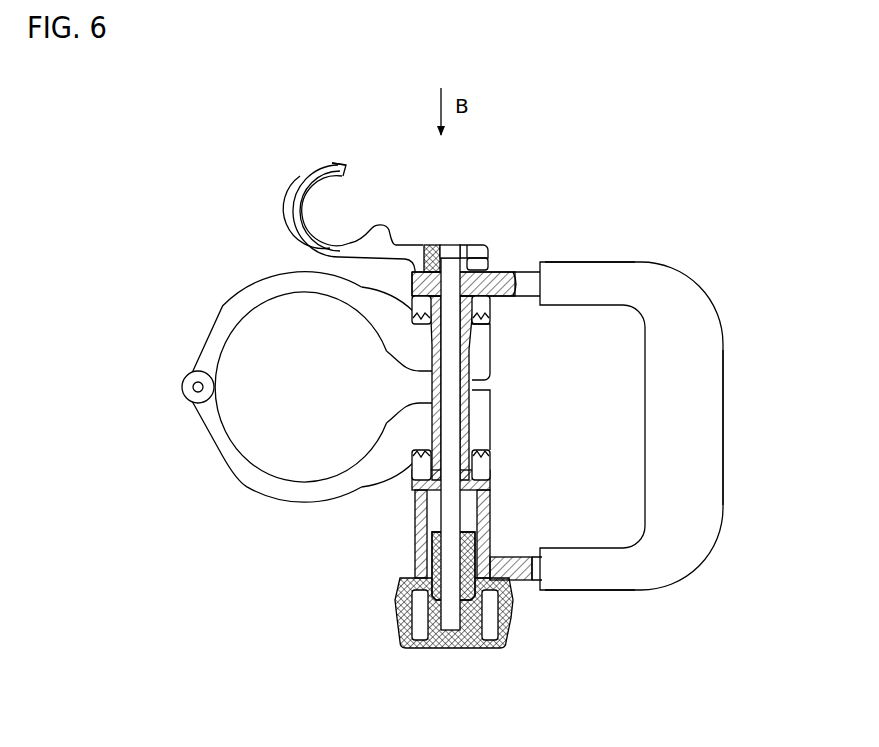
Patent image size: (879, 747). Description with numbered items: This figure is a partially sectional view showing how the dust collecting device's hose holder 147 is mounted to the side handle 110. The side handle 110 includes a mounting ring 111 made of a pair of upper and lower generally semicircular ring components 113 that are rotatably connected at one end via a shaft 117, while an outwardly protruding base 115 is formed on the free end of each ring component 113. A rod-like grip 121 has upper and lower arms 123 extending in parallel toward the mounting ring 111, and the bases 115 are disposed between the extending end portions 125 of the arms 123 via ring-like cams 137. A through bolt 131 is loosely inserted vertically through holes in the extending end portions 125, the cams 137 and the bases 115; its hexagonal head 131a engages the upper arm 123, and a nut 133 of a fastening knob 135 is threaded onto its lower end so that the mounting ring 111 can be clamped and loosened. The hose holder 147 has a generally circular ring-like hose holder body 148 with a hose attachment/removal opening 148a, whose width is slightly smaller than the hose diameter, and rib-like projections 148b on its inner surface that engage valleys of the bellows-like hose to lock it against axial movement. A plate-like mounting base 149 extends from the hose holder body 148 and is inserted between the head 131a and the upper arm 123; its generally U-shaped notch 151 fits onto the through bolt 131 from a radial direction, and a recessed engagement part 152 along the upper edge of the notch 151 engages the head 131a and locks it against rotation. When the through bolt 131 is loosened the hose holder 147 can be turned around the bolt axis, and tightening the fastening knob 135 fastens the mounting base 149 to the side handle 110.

The side handle 110 is at (700, 253).
The mounting ring 111 is at (216, 320).
The ring components 113 is at (255, 297).
The base 115 is at (483, 369).
The shaft 117 is at (196, 391).
The grip 121 is at (716, 383).
The arms 123 is at (609, 268).
The extending end portions 125 is at (520, 275).
The through bolt 131 is at (453, 508).
The head 131a is at (452, 245).
The nut 133 is at (466, 612).
The fastening knob 135 is at (402, 647).
The cams 137 is at (484, 312).
The hose holder 147 is at (300, 177).
The hose holder body 148 is at (298, 209).
The hose attachment/removal opening 148a is at (369, 192).
The rib-like projections 148b is at (348, 172).
The mounting base 149 is at (430, 246).
The notch 151 is at (480, 250).
The recessed engagement part 152 is at (480, 265).